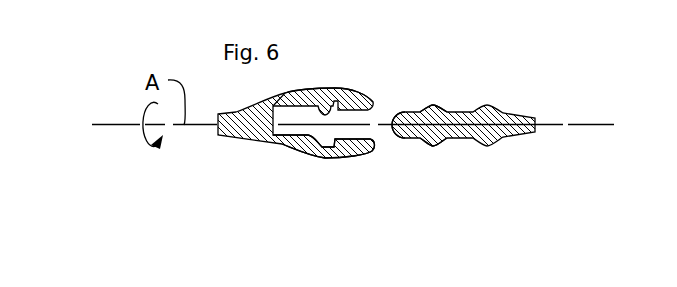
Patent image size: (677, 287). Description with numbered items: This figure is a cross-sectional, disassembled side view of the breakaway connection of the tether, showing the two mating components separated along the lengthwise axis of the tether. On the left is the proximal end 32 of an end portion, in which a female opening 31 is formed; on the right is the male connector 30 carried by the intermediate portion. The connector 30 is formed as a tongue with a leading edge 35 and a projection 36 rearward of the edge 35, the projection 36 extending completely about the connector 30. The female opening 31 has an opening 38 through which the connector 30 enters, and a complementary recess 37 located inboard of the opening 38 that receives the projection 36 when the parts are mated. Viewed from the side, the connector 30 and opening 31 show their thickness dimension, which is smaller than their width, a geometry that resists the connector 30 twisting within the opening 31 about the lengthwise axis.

The male connector 30 is at (465, 112).
The female opening 31 is at (280, 131).
The proximal end 32 is at (291, 158).
The leading edge 35 is at (388, 133).
The projection 36 is at (437, 104).
The recess 37 is at (315, 95).
The opening 38 is at (377, 105).